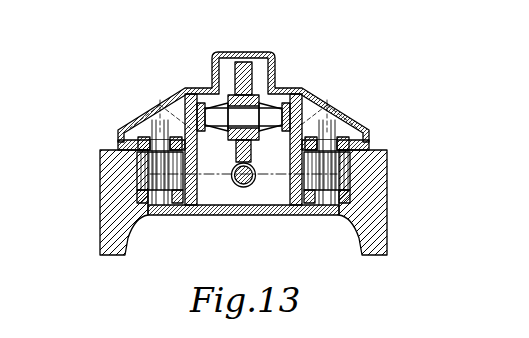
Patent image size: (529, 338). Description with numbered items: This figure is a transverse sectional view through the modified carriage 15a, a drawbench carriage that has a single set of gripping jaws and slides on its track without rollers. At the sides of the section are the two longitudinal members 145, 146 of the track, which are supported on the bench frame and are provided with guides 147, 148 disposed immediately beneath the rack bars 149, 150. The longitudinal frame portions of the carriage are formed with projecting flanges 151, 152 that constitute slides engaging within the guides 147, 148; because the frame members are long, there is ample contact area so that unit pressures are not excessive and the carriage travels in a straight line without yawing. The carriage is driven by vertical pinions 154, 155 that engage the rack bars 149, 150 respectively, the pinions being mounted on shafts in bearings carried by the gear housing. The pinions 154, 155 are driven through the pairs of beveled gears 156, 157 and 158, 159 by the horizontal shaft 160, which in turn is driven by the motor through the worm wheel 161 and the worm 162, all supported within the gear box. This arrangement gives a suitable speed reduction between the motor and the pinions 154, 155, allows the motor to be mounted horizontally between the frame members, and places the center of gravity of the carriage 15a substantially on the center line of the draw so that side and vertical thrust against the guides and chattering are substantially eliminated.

The carriage 15a is at (262, 52).
The longitudinal member 145 is at (112, 212).
The longitudinal member 146 is at (382, 225).
The guide 147 is at (132, 197).
The guide 148 is at (352, 197).
The rack bar 149 is at (137, 158).
The rack bar 150 is at (365, 158).
The projecting flange 151 is at (143, 205).
The projecting flange 152 is at (354, 206).
The vertical pinion 154 is at (180, 182).
The vertical pinion 155 is at (350, 178).
The beveled gear 156 is at (132, 125).
The beveled gear 157 is at (192, 98).
The beveled gear 158 is at (352, 128).
The beveled gear 159 is at (300, 100).
The horizontal shaft 160 is at (258, 96).
The worm wheel 161 is at (273, 62).
The worm 162 is at (251, 186).